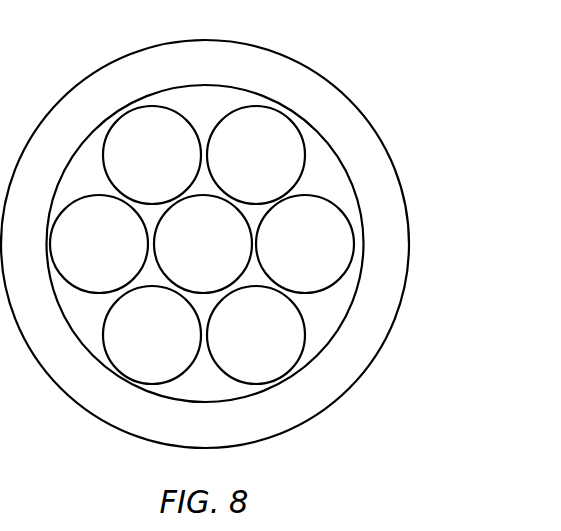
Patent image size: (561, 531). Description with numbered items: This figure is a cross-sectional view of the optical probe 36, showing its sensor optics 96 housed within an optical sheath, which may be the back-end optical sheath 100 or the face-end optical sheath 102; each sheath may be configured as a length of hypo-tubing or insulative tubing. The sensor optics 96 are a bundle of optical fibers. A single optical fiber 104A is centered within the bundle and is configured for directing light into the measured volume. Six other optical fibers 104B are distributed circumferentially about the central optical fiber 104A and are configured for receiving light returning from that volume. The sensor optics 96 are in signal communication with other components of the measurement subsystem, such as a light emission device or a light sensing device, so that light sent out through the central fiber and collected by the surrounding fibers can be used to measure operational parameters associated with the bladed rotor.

The optical probe 36 is at (259, 224).
The sensor optics 96 is at (216, 98).
The back-end optical sheath 100 is at (259, 244).
The face-end optical sheath 102 is at (375, 132).
The optical fiber 104A is at (231, 259).
The optical fibers 104B is at (180, 170).